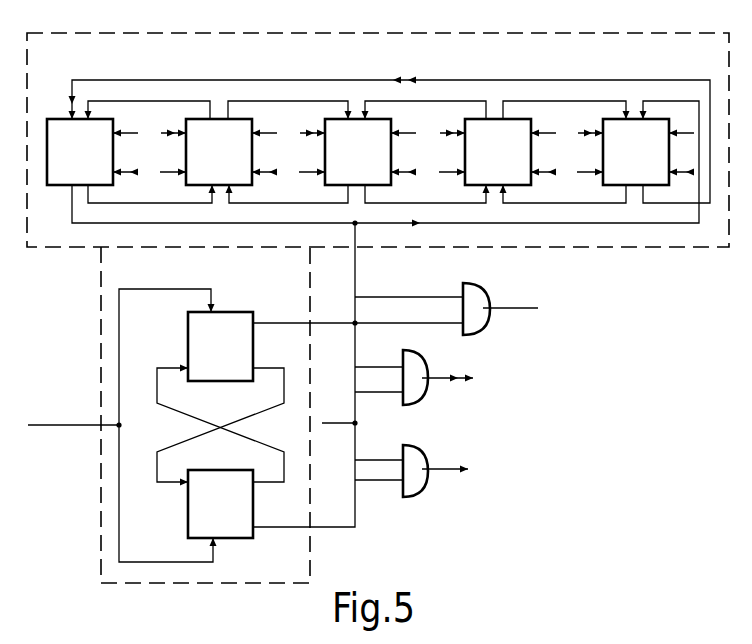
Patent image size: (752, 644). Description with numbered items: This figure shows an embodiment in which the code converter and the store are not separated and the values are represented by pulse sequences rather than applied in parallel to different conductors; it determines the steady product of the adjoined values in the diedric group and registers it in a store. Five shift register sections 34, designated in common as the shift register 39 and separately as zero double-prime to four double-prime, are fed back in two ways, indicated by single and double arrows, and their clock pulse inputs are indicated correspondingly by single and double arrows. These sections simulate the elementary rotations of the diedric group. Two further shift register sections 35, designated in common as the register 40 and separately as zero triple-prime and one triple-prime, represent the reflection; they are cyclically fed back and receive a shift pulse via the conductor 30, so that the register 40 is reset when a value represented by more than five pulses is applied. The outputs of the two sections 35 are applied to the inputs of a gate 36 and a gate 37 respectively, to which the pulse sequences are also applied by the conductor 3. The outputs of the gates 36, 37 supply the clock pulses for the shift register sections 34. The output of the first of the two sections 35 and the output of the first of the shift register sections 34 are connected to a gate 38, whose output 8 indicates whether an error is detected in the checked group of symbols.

The conductor 3 is at (340, 423).
The output 8 is at (537, 309).
The conductor 30 is at (62, 425).
The shift register section 34 is at (56, 127).
The shift register section 35 is at (198, 337).
The gate 36 is at (410, 372).
The gate 37 is at (410, 465).
The gate 38 is at (471, 303).
The shift register 39 is at (623, 45).
The register 40 is at (112, 311).